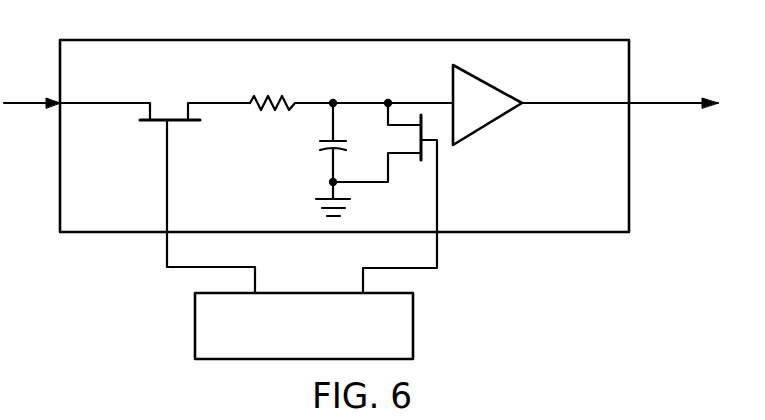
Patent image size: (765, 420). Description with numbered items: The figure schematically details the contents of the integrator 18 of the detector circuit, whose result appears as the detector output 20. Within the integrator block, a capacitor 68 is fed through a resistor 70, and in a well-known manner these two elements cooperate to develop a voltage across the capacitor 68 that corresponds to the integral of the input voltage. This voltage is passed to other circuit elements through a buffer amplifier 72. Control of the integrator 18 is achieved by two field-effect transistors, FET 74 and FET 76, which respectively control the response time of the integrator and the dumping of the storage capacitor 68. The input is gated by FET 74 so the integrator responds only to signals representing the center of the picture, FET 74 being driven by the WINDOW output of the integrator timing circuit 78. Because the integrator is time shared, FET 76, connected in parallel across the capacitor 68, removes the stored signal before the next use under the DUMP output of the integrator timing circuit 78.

The integrator 18 is at (630, 53).
The detector output 20 is at (666, 98).
The capacitor 68 is at (320, 146).
The resistor 70 is at (283, 89).
The buffer amplifier 72 is at (504, 96).
The FET 74 is at (167, 112).
The FET 76 is at (412, 141).
The integrator timing circuit 78 is at (306, 291).